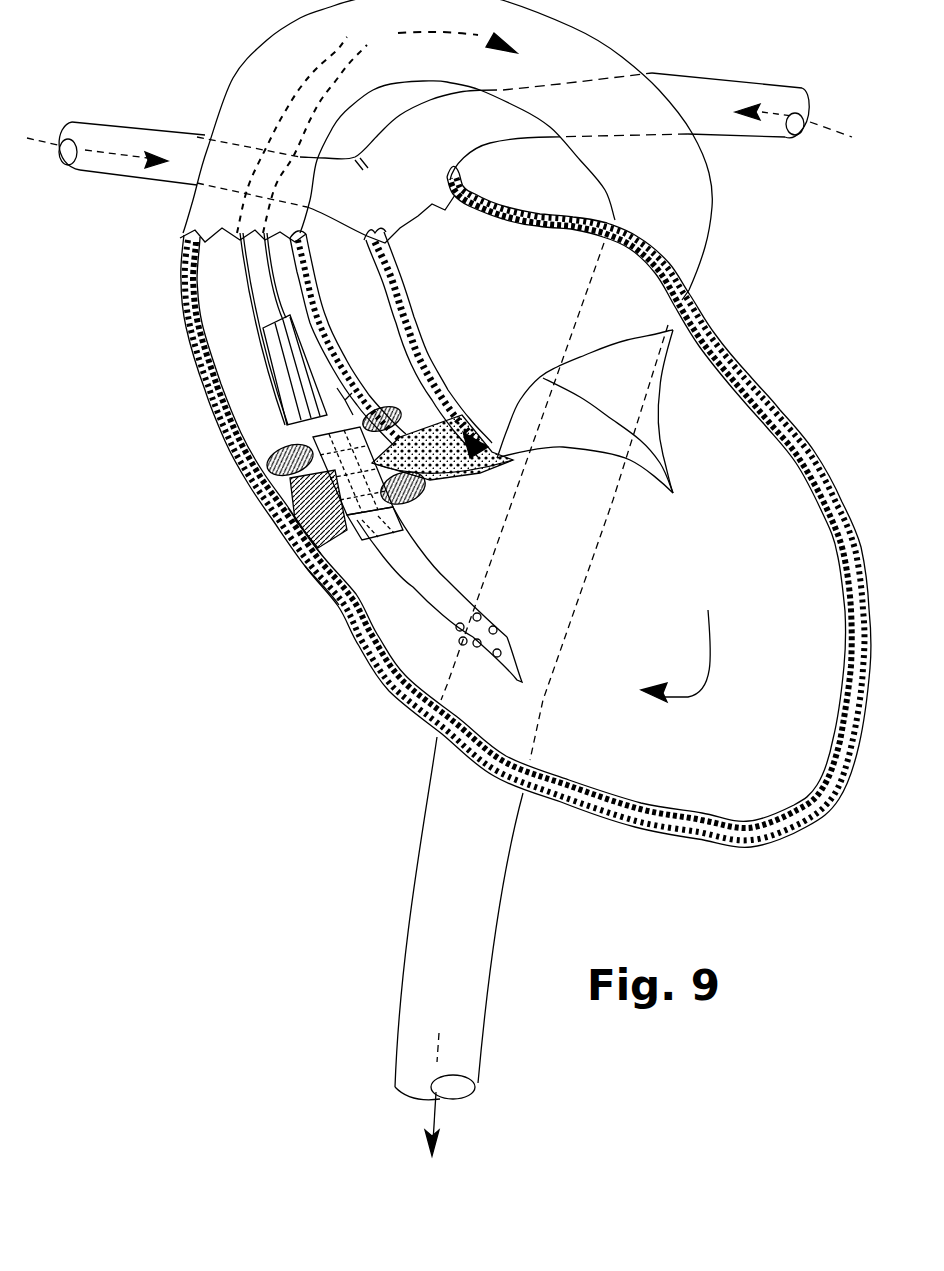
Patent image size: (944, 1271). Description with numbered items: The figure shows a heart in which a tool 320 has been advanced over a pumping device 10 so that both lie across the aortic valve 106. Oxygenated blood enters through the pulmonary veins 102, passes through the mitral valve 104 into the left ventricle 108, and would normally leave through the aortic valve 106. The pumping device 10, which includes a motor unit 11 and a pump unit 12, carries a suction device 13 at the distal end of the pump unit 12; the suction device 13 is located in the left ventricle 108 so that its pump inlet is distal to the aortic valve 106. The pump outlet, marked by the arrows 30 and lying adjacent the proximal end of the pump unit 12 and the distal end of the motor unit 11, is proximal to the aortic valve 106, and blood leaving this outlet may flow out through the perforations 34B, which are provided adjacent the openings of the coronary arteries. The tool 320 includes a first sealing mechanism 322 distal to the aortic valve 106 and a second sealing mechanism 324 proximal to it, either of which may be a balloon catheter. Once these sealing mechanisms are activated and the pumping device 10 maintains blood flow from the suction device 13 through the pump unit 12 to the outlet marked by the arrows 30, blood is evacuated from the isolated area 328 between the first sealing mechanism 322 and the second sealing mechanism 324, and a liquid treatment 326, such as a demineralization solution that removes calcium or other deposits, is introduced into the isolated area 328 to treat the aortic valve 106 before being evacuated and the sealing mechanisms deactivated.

The pumping device 10 is at (270, 381).
The motor unit 11 is at (280, 357).
The perforations 34B is at (283, 398).
The arrows marking pump outlet 30 is at (320, 430).
The second sealing mechanism 324 is at (267, 460).
The pump unit 12 is at (333, 473).
The liquid treatment 326 is at (300, 500).
The aortic valve 106 is at (310, 520).
The first sealing mechanism 322 is at (320, 573).
The tool 320 is at (420, 415).
The isolated area 328 is at (432, 427).
The suction device 13 is at (428, 578).
The mitral valve 104 is at (641, 394).
The left ventricle 108 is at (770, 660).
The pulmonary veins 102 is at (729, 110).